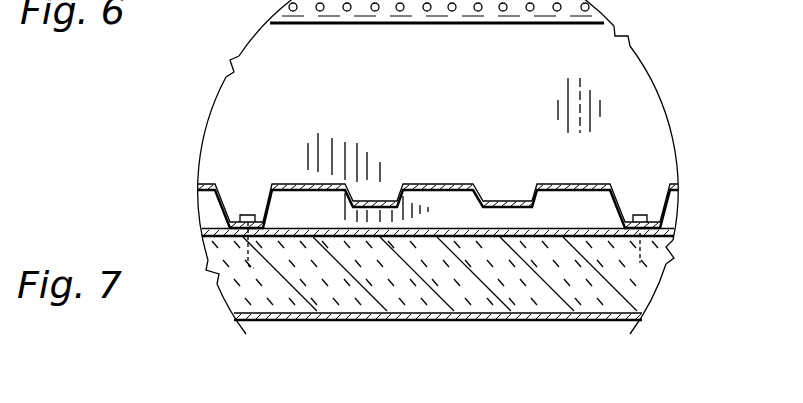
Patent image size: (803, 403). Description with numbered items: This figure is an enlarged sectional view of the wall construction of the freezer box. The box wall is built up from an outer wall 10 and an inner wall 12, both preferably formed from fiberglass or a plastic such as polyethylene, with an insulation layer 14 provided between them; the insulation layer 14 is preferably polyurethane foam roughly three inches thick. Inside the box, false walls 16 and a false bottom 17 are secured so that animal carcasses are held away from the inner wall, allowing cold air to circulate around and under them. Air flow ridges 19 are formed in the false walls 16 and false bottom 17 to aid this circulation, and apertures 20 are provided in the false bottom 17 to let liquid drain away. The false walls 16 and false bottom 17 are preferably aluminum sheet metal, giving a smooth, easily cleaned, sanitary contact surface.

The outer wall 10 is at (471, 232).
The inner wall 12 is at (597, 322).
The insulation layer 14 is at (265, 278).
The false walls 16 is at (445, 183).
The false bottom 17 is at (412, 25).
The air flow ridges 19 is at (303, 183).
The apertures 20 is at (503, 11).